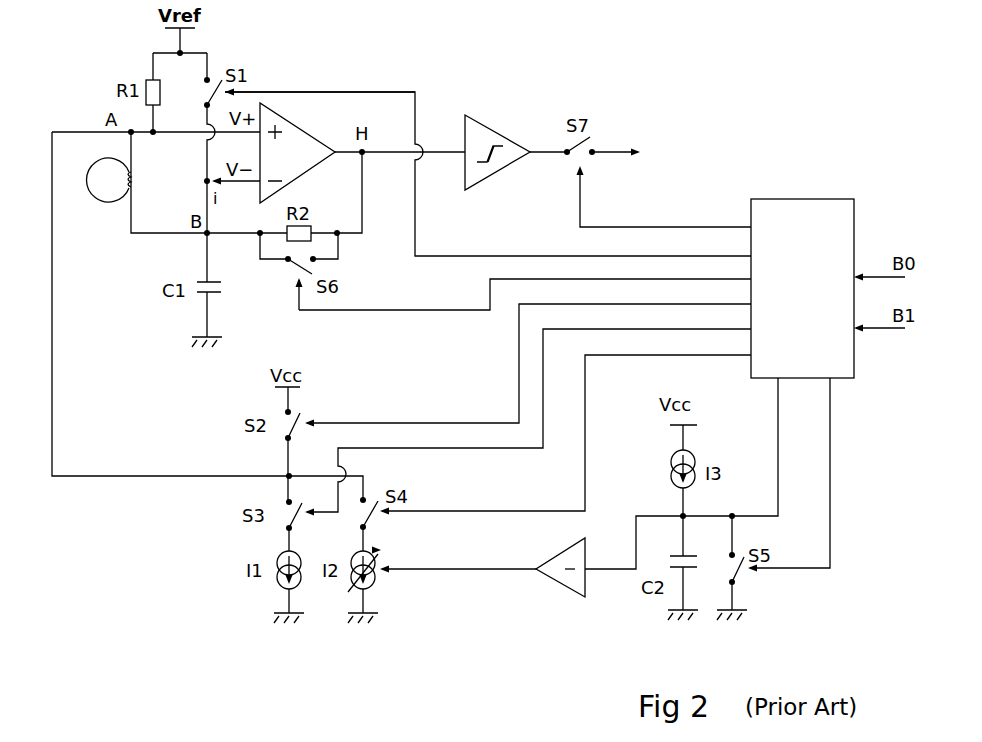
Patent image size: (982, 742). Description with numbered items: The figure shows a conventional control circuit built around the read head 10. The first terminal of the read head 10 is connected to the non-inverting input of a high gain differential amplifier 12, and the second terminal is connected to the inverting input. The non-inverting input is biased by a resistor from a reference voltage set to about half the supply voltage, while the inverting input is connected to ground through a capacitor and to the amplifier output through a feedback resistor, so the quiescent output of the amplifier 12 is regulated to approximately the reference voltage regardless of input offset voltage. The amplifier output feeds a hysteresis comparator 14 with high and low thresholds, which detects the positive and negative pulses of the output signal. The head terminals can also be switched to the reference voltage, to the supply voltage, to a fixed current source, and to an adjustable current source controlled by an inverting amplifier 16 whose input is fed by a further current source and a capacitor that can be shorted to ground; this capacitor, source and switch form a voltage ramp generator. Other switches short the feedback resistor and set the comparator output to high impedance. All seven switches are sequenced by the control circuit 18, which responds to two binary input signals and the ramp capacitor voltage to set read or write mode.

The read head 10 is at (105, 195).
The high gain differential amplifier 12 is at (294, 135).
The hysteresis comparator 14 is at (476, 127).
The inverting amplifier 16 is at (568, 582).
The control circuit 18 is at (797, 205).